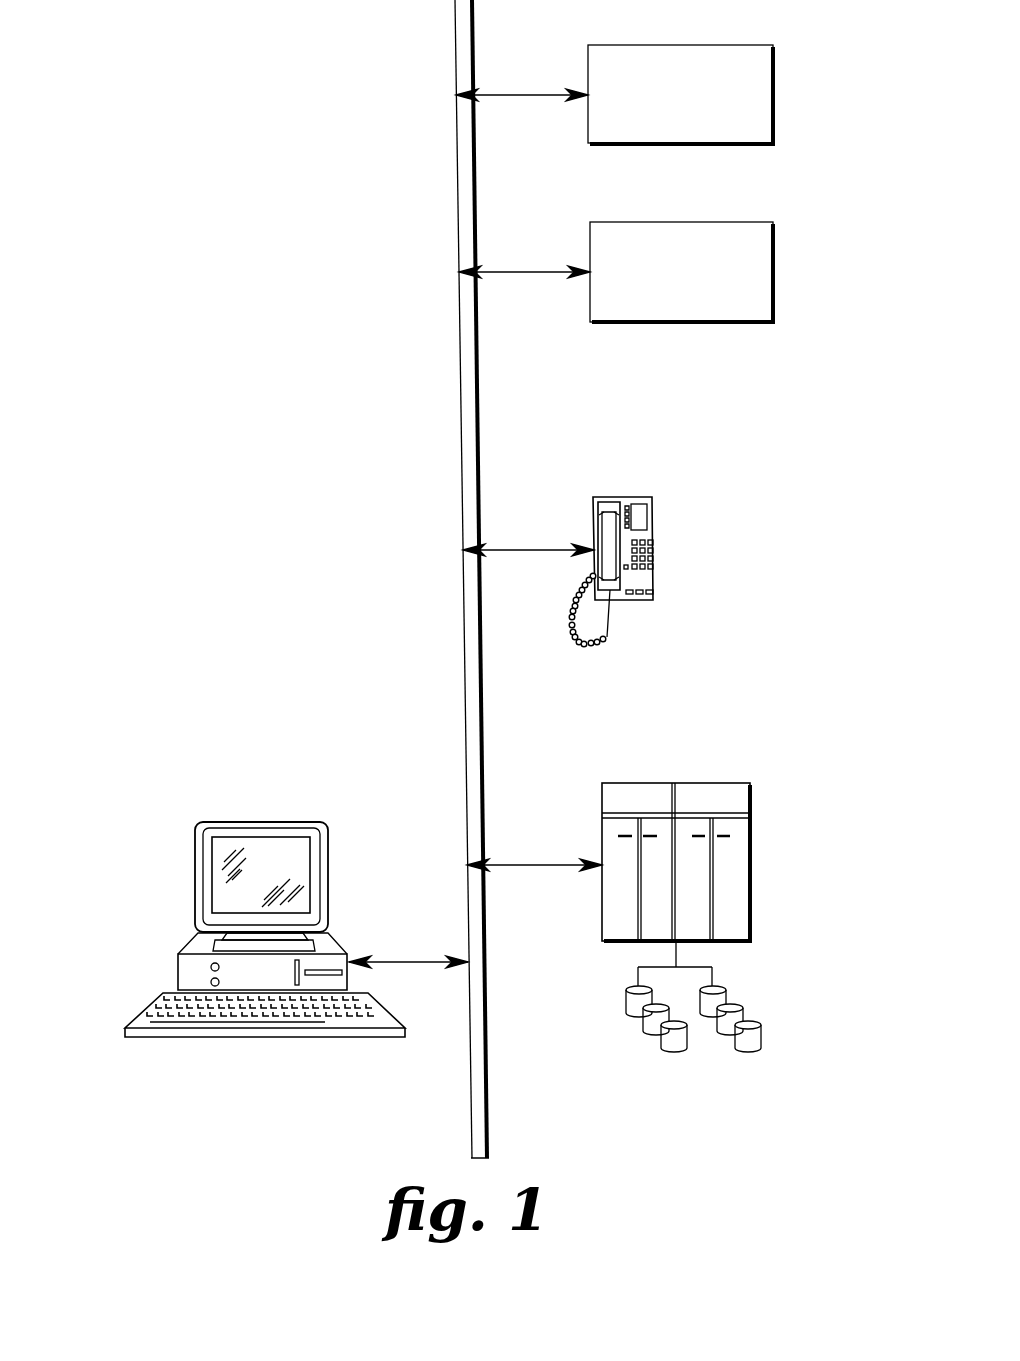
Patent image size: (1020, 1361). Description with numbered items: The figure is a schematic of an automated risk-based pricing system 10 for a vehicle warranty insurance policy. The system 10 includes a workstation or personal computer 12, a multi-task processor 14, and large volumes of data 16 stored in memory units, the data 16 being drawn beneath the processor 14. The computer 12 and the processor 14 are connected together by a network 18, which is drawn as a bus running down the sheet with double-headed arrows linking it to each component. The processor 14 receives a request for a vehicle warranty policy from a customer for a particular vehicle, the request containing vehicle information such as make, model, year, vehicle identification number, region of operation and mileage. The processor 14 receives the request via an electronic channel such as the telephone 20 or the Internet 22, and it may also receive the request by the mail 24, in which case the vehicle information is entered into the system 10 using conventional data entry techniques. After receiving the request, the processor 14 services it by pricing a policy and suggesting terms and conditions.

The automated risk-based pricing system 10 is at (200, 283).
The workstation or personal computer 12 is at (178, 968).
The multi-task processor 14 is at (750, 874).
The data 16 is at (762, 1037).
The network 18 is at (461, 419).
The telephone 20 is at (655, 538).
The Internet 22 is at (773, 88).
The mail 24 is at (773, 273).